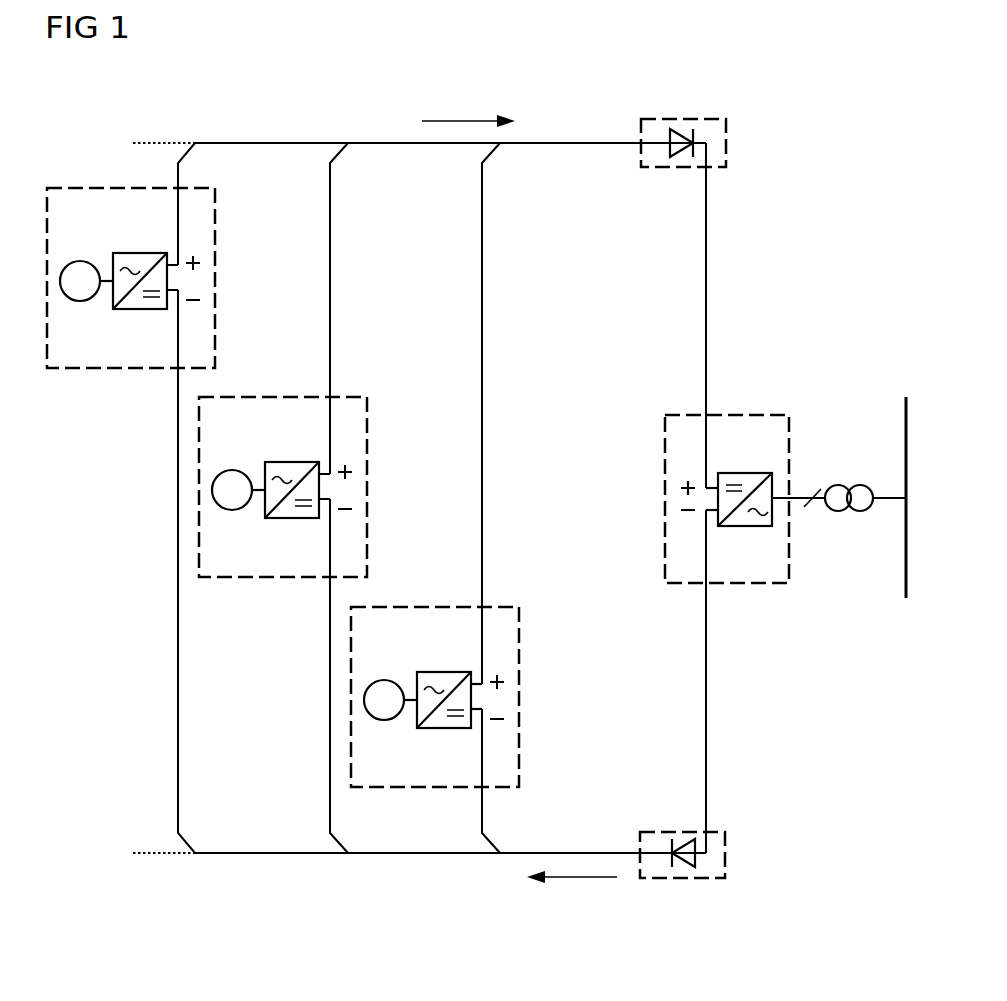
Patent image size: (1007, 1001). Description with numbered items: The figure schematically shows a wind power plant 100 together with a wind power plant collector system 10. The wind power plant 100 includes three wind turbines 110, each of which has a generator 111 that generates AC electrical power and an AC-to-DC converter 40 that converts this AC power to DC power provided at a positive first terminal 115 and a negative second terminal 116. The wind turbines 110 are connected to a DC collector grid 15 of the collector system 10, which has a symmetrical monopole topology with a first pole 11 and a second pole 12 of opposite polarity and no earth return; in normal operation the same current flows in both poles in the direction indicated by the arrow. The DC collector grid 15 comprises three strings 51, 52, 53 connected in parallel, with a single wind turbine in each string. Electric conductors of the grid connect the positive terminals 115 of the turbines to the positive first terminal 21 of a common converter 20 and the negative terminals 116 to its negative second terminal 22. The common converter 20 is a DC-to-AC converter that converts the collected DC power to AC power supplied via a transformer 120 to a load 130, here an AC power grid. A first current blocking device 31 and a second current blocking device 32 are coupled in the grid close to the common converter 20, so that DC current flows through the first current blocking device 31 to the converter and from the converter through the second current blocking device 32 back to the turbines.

The wind power plant 100 is at (765, 83).
The wind power plant collector system 10 is at (368, 864).
The first pole 11 is at (385, 141).
The second pole 12 is at (444, 856).
The DC collector grid 15 is at (547, 133).
The common converter 20 is at (665, 491).
The first terminal 21 is at (705, 415).
The second terminal 22 is at (705, 583).
The first current blocking device 31 is at (690, 118).
The second current blocking device 32 is at (690, 879).
The AC-to-DC converter 40 is at (141, 252).
The first string 51 is at (211, 76).
The second string 52 is at (361, 76).
The third string 53 is at (513, 76).
The wind turbine 110 is at (215, 266).
The generator 111 is at (80, 302).
The first terminal 115 is at (483, 606).
The second terminal 116 is at (483, 788).
The transformer 120 is at (858, 513).
The load 130 is at (905, 432).